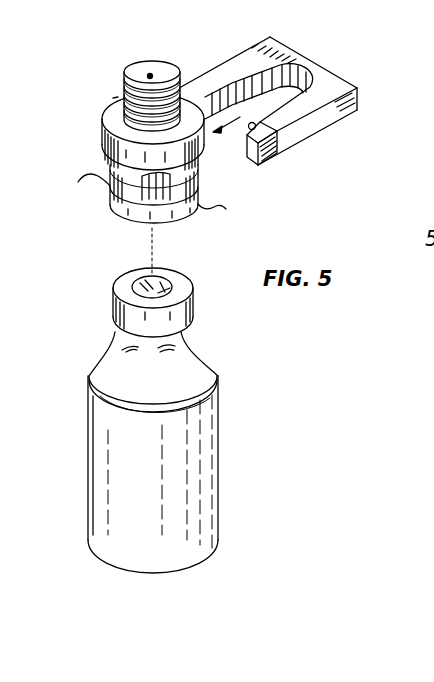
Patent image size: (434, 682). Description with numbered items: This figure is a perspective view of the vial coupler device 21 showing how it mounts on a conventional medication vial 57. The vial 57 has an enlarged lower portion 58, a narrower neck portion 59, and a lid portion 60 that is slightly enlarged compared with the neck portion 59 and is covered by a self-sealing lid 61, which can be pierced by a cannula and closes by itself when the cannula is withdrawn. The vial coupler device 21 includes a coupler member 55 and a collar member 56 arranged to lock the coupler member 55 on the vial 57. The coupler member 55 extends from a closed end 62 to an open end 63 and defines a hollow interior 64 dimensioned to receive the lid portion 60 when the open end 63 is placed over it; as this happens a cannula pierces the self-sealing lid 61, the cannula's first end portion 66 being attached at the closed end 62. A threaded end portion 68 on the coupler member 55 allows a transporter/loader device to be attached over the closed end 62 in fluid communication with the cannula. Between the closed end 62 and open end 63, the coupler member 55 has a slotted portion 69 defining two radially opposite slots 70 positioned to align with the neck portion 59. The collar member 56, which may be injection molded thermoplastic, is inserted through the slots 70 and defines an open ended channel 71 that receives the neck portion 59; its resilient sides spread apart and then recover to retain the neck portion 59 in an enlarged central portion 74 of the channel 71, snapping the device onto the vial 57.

The vial coupler device 21 is at (145, 135).
The coupler member 55 is at (99, 142).
The collar member 56 is at (281, 104).
The vial 57 is at (158, 420).
The enlarged lower portion 58 is at (88, 495).
The neck portion 59 is at (120, 338).
The lid portion 60 is at (123, 316).
The self-sealing lid 61 is at (133, 284).
The closed end 62 is at (158, 62).
The open end 63 is at (226, 209).
The hollow interior 64 is at (168, 178).
The first end portion 66 is at (149, 75).
The threaded end portion 68 is at (113, 98).
The slotted portion 69 is at (122, 214).
The slots 70 is at (78, 183).
The open ended channel 71 is at (264, 139).
The enlarged central portion 74 is at (295, 102).